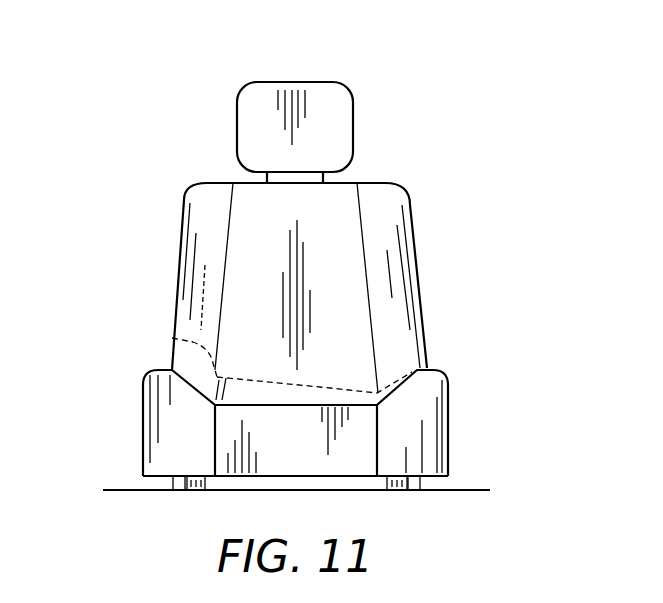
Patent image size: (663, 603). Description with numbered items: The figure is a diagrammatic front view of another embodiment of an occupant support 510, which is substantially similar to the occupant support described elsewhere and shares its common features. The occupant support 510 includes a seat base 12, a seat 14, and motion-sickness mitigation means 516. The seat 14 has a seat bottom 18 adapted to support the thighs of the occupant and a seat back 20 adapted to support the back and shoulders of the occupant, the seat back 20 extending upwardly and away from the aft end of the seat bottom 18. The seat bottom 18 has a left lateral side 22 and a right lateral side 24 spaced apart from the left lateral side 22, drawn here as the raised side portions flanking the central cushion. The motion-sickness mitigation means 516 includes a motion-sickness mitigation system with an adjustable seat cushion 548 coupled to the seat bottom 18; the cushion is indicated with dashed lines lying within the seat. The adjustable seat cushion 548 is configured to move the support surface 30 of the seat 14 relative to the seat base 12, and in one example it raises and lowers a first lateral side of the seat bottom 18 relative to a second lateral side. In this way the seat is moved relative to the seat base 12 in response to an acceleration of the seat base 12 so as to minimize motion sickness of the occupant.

The occupant support 510 is at (130, 127).
The seat 14 is at (426, 294).
The seat back 20 is at (410, 232).
The support surface 30 is at (337, 405).
The right lateral side 24 is at (140, 429).
The seat bottom 18 is at (452, 401).
The left lateral side 22 is at (452, 449).
The seat base 12 is at (427, 490).
The motion-sickness mitigation means 516 is at (248, 378).
The adjustable seat cushion 548 is at (197, 360).